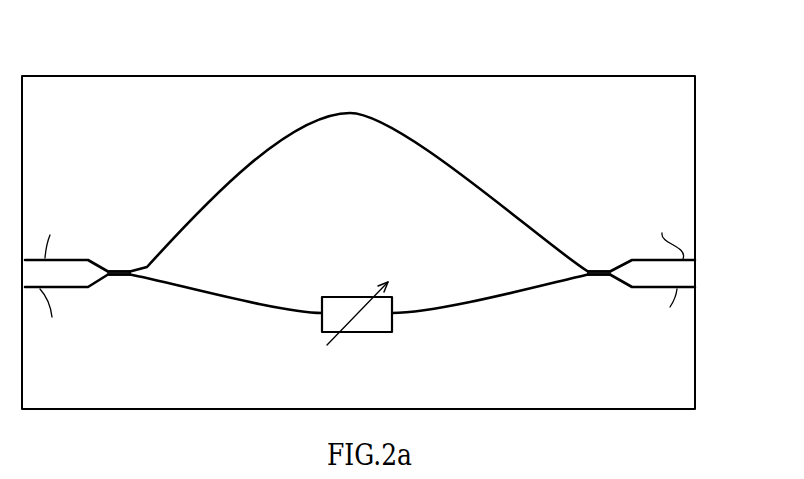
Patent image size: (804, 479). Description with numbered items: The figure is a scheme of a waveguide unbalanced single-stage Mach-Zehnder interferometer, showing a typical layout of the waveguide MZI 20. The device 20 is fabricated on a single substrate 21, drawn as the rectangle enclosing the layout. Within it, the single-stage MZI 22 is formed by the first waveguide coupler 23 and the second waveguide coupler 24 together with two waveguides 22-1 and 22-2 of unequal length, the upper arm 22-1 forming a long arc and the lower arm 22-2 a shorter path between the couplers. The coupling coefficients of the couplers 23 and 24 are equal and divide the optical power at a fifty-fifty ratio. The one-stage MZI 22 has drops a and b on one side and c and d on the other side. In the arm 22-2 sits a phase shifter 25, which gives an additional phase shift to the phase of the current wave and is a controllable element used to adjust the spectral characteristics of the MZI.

The waveguide MZI 20 is at (117, 52).
The single substrate 21 is at (642, 117).
The single-stage MZI 22 is at (270, 136).
The waveguide 22-1 is at (180, 225).
The waveguide 22-2 is at (258, 305).
The first waveguide coupler 23 is at (115, 271).
The second waveguide coupler 24 is at (602, 270).
The phase shifter 25 is at (360, 333).